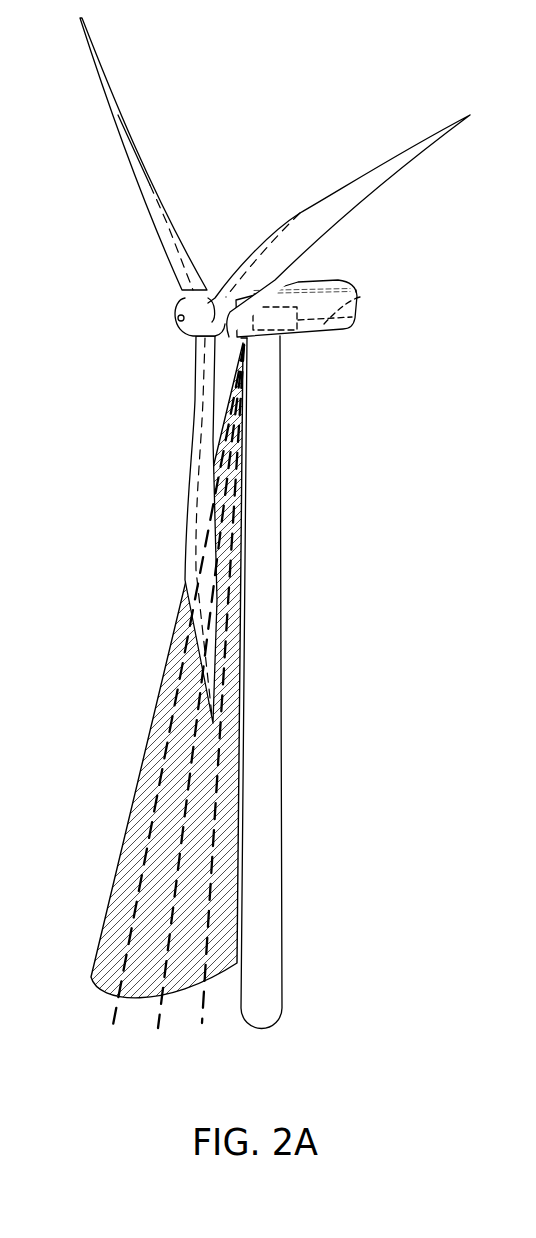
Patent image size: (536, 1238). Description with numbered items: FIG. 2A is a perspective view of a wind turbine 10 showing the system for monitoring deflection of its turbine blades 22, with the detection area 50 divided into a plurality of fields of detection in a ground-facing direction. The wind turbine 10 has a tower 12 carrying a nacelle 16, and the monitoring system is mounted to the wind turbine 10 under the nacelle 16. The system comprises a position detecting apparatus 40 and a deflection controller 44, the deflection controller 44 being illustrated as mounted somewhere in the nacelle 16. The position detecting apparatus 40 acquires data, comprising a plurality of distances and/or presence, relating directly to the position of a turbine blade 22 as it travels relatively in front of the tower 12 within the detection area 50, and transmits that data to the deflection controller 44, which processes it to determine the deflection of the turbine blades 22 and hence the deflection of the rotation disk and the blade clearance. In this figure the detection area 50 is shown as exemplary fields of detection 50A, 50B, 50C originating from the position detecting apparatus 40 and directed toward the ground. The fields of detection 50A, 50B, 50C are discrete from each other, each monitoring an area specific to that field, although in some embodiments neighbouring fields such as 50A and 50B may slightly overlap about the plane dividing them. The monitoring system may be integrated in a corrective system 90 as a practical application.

The wind turbine 10 is at (96, 267).
The tower 12 is at (280, 802).
The nacelle 16 is at (352, 320).
The turbine blade 22 is at (187, 487).
The position detecting apparatus 40 is at (243, 341).
The deflection controller 44 is at (360, 297).
The detection area 50 is at (128, 860).
The field of detection 50A is at (133, 1008).
The field of detection 50B is at (184, 1009).
The field of detection 50C is at (222, 1000).
The corrective system 90 is at (342, 270).